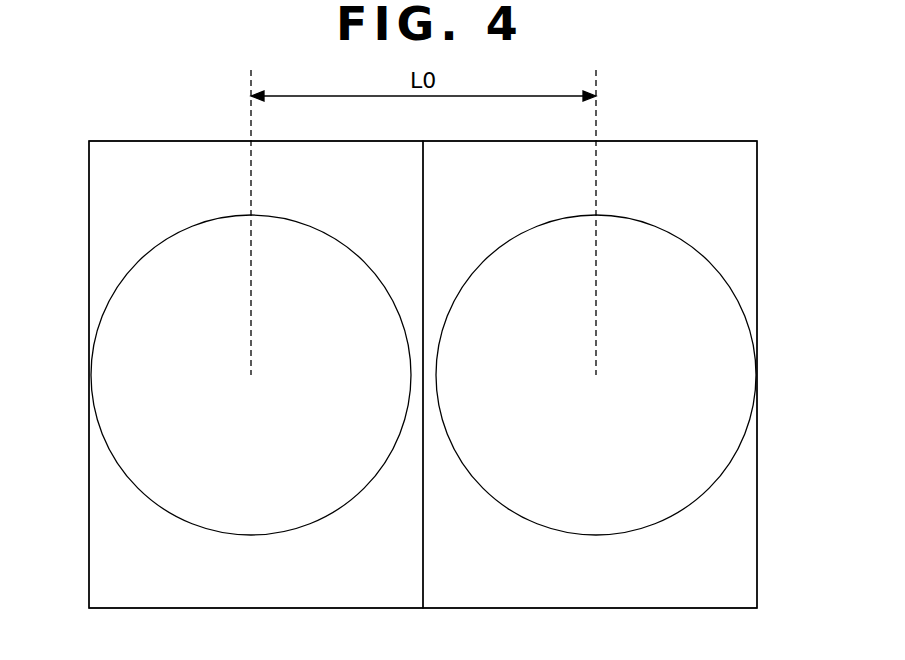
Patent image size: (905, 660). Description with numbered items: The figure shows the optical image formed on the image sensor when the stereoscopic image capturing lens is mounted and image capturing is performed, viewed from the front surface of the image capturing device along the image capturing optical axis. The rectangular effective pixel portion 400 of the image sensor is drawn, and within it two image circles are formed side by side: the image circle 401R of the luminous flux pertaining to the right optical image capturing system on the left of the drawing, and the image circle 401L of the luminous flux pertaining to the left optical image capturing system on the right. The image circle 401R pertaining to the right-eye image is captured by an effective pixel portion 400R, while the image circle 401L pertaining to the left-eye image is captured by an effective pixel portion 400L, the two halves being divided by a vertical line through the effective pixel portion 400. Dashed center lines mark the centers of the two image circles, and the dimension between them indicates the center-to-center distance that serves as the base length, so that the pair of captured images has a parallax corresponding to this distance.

The effective pixel portion 400 is at (124, 131).
The effective pixel portion 400R is at (251, 597).
The effective pixel portion 400L is at (598, 597).
The image circle 401R is at (105, 310).
The image circle 401L is at (741, 305).